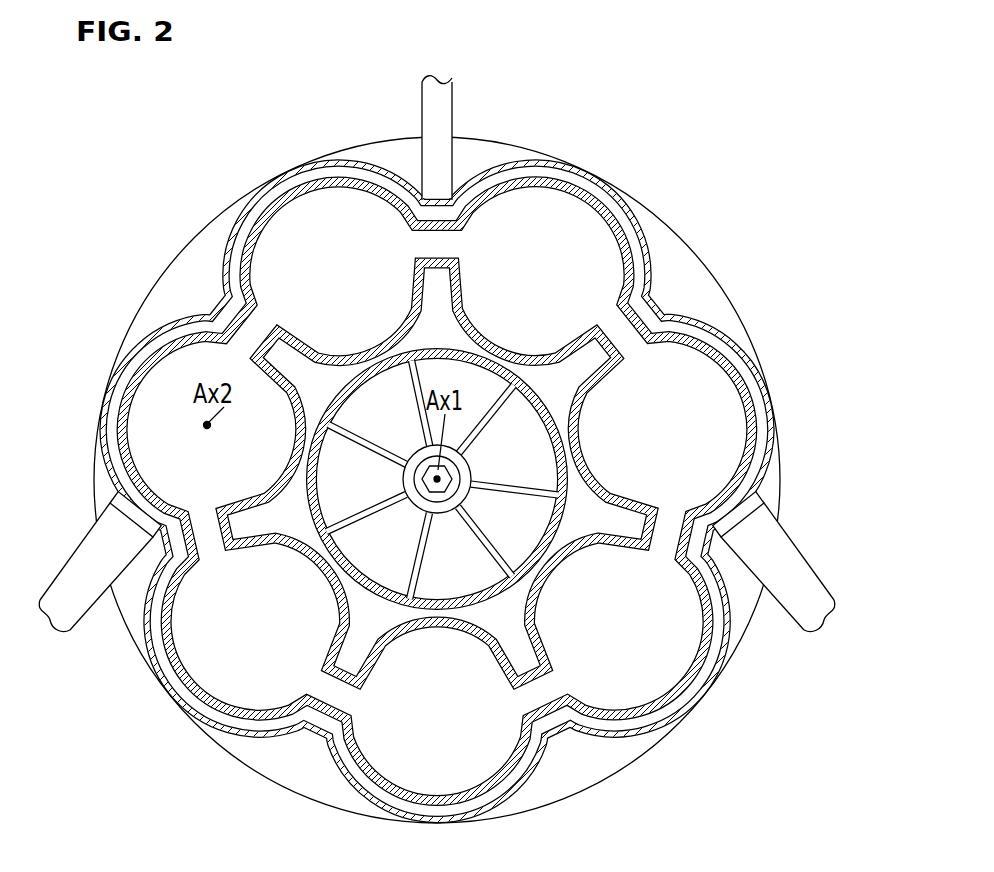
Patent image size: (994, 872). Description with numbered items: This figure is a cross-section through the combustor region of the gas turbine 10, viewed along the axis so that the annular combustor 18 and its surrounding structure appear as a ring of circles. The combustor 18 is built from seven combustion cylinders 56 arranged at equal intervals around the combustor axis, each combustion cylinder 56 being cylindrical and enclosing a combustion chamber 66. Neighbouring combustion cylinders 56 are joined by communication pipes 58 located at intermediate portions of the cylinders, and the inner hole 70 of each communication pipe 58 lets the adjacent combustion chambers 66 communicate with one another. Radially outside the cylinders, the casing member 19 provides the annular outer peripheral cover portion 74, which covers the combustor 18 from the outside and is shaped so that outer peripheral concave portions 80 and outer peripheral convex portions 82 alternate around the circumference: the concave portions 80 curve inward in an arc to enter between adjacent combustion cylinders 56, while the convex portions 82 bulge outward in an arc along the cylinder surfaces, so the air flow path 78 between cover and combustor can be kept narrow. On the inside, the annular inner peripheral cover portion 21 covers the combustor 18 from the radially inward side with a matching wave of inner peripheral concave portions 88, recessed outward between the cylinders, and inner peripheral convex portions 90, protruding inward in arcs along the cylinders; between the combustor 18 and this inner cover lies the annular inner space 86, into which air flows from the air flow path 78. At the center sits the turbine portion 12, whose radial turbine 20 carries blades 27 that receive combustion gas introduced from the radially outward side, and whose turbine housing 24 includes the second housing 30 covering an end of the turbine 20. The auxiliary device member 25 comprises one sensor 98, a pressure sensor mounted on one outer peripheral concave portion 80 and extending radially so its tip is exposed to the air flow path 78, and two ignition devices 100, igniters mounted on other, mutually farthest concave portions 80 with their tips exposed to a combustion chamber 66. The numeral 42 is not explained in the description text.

The gas turbine 10 is at (259, 58).
The turbine portion 12 is at (409, 530).
The combustor 18 is at (637, 310).
The casing member 19 is at (437, 466).
The turbine 20 is at (436, 600).
The inner peripheral cover portion 21 is at (580, 483).
The turbine housing 24 is at (441, 671).
The auxiliary device member 25 is at (434, 353).
The blades 27 is at (357, 541).
The second housing 30 is at (477, 612).
The outer casing circle 42 is at (677, 233).
The combustion cylinder 56 is at (752, 397).
The communication pipe 58 is at (228, 327).
The combustion chamber 66 is at (700, 387).
The inner hole 70 is at (248, 333).
The outer peripheral cover portion 74 is at (590, 167).
The air flow path 78 is at (196, 703).
The outer peripheral concave portion 80 is at (213, 300).
The outer peripheral convex portion 82 is at (288, 169).
The inner space 86 is at (523, 647).
The inner peripheral concave portion 88 is at (602, 548).
The inner peripheral convex portion 90 is at (553, 561).
The sensor 98 is at (435, 92).
The ignition device 100 is at (62, 610).